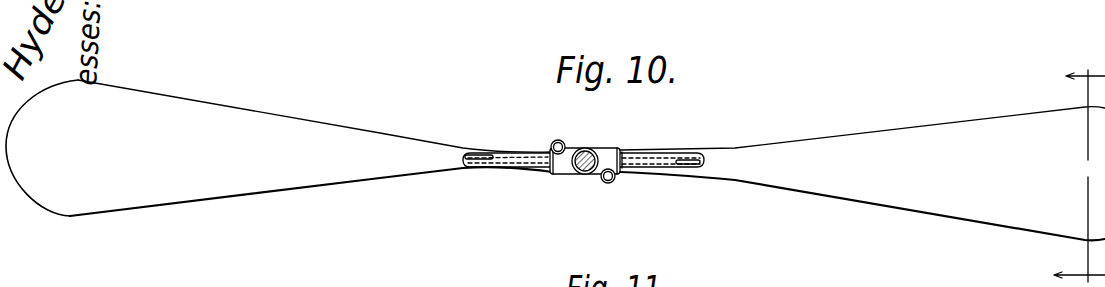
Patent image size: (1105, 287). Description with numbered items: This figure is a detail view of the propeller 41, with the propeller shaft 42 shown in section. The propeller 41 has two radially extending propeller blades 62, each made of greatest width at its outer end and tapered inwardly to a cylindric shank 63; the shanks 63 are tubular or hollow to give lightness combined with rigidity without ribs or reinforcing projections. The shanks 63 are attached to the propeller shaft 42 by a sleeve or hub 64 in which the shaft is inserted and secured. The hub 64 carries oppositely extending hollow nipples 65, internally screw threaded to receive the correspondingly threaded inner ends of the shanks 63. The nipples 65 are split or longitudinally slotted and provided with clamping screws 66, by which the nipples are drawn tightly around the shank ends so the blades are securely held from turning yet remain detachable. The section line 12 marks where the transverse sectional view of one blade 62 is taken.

The section line 12 is at (1079, 158).
The propeller 41 is at (672, 150).
The propeller shaft 42 is at (587, 152).
The propeller blade 62 is at (245, 122).
The shank 63 is at (533, 166).
The hub 64 is at (578, 174).
The nipple 65 is at (617, 153).
The clamping screw 66 is at (553, 143).